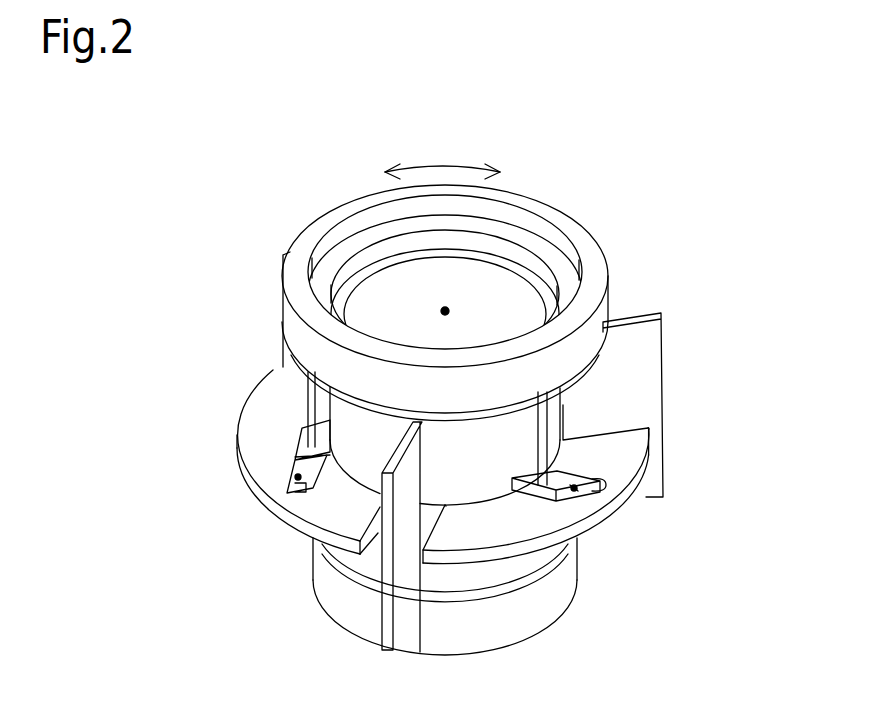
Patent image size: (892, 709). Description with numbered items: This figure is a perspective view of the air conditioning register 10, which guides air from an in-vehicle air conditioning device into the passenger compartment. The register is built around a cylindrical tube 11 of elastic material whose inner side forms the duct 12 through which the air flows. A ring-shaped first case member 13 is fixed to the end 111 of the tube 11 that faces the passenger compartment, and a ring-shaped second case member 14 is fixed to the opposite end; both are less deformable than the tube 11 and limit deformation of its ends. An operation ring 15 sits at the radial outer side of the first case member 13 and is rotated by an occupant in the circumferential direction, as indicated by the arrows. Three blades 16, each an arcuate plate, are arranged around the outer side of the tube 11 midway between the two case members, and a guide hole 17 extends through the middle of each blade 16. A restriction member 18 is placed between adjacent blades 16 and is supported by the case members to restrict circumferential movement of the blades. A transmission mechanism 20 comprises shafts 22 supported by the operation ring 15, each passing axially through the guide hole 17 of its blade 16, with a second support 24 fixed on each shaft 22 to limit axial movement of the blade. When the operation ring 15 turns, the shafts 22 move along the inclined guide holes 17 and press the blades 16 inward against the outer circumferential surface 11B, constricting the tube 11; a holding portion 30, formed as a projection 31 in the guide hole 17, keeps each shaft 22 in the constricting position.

The air conditioning register 10 is at (222, 173).
The tube 11 is at (355, 458).
The outer circumferential surface 11B is at (450, 482).
The duct 12 is at (444, 307).
The first case member 13 is at (327, 274).
The second case member 14 is at (335, 598).
The operation ring 15 is at (595, 245).
The blade 16 is at (256, 403).
The guide hole 17 is at (292, 473).
The restriction member 18 is at (281, 357).
The transmission mechanism 20 is at (634, 411).
The shaft 22 is at (308, 393).
The second support 24 is at (297, 442).
The holding portion 30 is at (590, 488).
The projection 31 is at (643, 535).
The end 111 is at (527, 273).